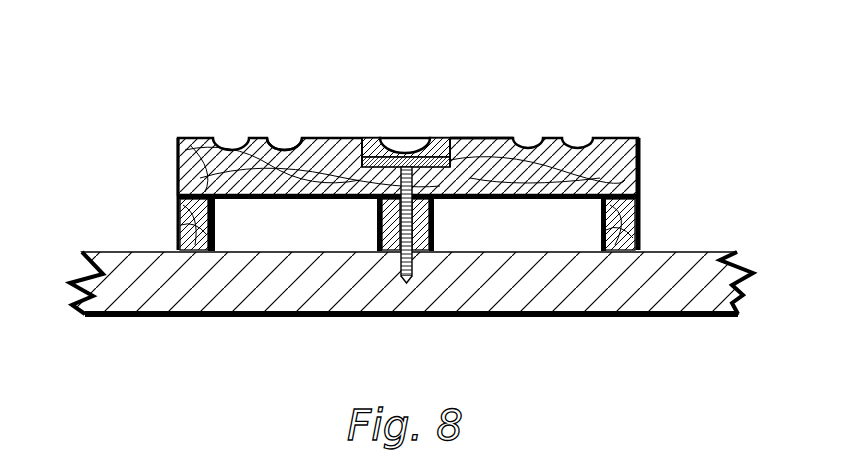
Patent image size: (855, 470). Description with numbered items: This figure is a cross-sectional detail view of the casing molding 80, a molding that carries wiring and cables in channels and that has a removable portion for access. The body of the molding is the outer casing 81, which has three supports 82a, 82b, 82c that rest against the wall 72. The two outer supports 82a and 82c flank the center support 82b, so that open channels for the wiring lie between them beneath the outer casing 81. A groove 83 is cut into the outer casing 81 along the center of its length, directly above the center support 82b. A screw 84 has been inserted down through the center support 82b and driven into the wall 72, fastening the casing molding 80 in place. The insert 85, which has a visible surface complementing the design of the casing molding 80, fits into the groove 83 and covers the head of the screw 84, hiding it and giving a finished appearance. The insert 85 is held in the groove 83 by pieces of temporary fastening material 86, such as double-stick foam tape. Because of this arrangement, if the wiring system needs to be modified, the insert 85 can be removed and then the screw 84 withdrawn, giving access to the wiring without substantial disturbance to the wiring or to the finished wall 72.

The wall 72 is at (688, 317).
The casing molding 80 is at (652, 106).
The outer casing 81 is at (640, 168).
The support 82a is at (178, 223).
The center support 82b is at (433, 227).
The support 82c is at (640, 225).
The groove 83 is at (472, 147).
The screw 84 is at (401, 262).
The insert 85 is at (398, 150).
The temporary fastening material 86 is at (325, 142).